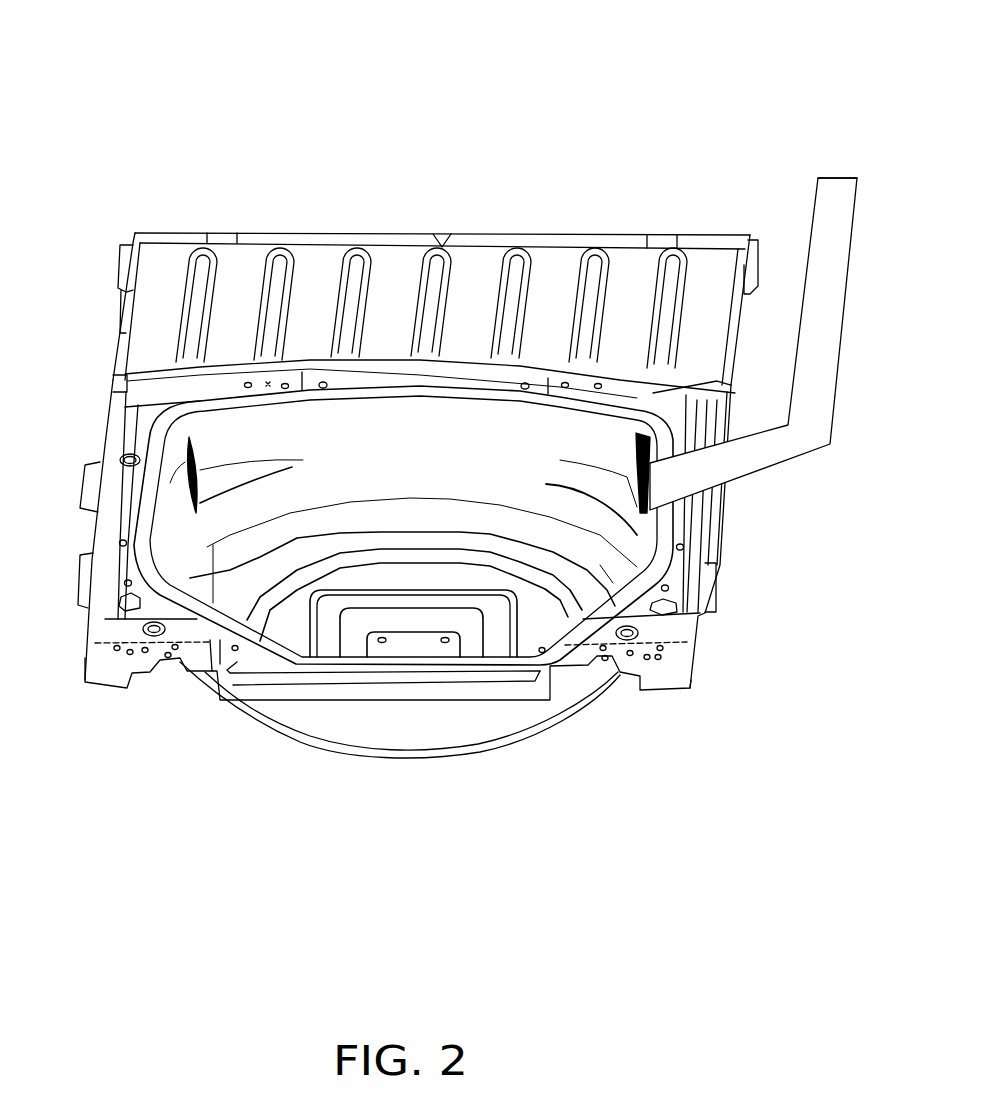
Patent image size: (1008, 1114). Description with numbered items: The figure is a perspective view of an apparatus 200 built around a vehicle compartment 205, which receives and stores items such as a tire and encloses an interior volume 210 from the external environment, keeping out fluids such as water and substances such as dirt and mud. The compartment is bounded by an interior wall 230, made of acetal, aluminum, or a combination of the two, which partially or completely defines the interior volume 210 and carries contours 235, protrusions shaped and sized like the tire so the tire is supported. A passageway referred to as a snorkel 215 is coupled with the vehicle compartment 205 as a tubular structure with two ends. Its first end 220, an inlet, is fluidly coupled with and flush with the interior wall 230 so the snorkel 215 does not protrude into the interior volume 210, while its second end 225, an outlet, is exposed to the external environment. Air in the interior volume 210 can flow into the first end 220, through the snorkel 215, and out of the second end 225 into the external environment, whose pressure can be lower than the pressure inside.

The apparatus 200 is at (84, 90).
The vehicle compartment 205 is at (262, 728).
The interior volume 210 is at (350, 458).
The snorkel 215 is at (832, 302).
The first end 220 is at (637, 440).
The second end 225 is at (803, 168).
The interior wall 230 is at (546, 484).
The contour 235 is at (257, 555).